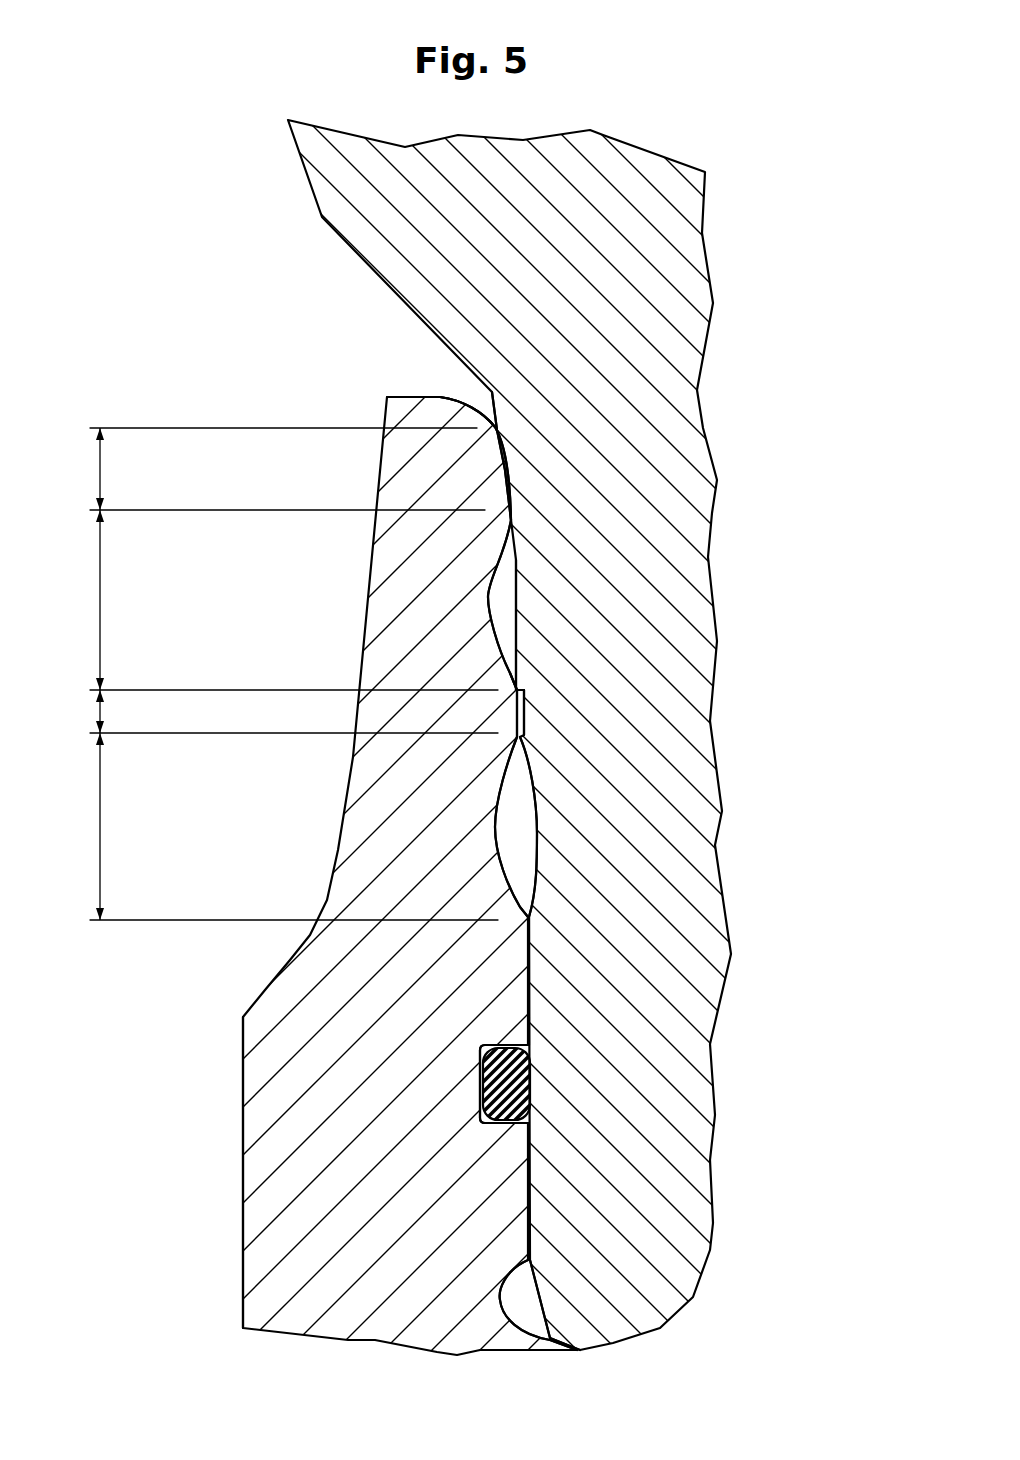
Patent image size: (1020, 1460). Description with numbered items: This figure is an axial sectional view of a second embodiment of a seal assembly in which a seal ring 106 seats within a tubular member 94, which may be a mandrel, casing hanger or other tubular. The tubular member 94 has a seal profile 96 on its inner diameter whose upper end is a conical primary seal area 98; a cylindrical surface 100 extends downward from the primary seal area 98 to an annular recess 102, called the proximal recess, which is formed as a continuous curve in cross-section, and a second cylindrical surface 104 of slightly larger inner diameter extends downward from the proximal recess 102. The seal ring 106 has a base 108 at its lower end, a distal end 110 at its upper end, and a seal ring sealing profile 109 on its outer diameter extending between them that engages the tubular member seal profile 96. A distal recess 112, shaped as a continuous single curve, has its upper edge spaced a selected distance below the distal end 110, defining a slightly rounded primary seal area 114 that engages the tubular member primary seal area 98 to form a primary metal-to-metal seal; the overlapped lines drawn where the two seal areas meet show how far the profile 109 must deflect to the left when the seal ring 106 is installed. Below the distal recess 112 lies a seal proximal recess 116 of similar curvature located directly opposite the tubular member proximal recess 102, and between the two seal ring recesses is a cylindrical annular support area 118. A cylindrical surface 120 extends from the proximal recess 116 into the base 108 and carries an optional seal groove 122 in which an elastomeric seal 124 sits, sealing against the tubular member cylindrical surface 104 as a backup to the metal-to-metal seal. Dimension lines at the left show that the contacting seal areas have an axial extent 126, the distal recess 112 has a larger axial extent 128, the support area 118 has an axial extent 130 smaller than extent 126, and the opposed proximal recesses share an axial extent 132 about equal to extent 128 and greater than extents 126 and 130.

The tubular member 94 is at (388, 263).
The seal profile 96 is at (505, 554).
The primary seal area 98 is at (505, 465).
The cylindrical surface 100 is at (517, 628).
The annular recess 102 is at (535, 823).
The cylindrical surface 104 is at (523, 992).
The seal ring 106 is at (233, 1123).
The base 108 is at (303, 1217).
The seal ring sealing profile 109 is at (530, 687).
The distal end 110 is at (408, 397).
The distal recess 112 is at (490, 597).
The primary seal area 114 is at (515, 468).
The seal proximal recess 116 is at (498, 813).
The annular support area 118 is at (524, 712).
The cylindrical surface 120 is at (530, 1200).
The seal groove 122 is at (523, 1073).
The elastomeric seal 124 is at (510, 1073).
The axial extent 126 is at (102, 470).
The axial extent 128 is at (102, 598).
The axial extent 130 is at (102, 715).
The axial extent 132 is at (102, 828).